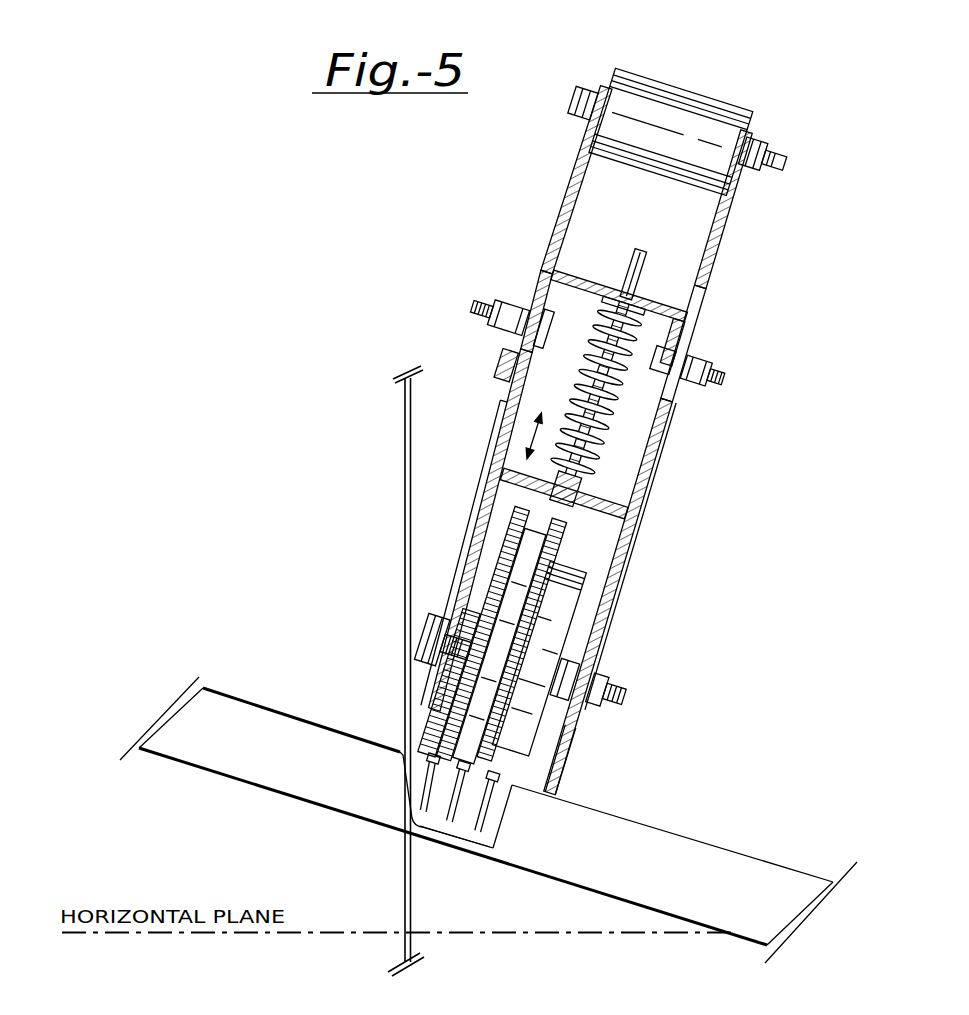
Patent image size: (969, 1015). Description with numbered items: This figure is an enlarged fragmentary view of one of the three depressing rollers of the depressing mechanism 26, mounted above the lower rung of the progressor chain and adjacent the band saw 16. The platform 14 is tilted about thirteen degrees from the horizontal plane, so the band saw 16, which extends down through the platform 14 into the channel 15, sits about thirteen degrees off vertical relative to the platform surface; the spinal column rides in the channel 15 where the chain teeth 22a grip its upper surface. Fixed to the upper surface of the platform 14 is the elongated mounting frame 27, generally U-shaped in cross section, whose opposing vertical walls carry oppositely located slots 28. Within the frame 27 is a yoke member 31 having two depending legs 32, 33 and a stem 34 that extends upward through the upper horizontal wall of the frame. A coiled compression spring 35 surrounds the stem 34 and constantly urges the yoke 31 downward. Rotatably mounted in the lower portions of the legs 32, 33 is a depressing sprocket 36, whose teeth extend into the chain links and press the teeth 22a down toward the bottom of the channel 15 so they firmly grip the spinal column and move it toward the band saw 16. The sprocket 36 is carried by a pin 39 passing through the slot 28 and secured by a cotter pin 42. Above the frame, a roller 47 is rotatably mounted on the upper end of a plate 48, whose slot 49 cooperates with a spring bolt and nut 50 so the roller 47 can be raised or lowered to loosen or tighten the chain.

The platform 14 is at (716, 831).
The channel 15 is at (438, 817).
The band saw 16 is at (405, 436).
The spinal-column-engaging tooth 22a is at (472, 825).
The depressing mechanism 26 is at (598, 451).
The mounting frame 27 is at (503, 412).
The slots 28 is at (604, 627).
The yoke member 31 is at (617, 507).
The leg 32 is at (476, 530).
The leg 33 is at (630, 548).
The stem 34 is at (627, 268).
The coiled compression spring 35 is at (606, 385).
The depressing sprocket 36 is at (484, 790).
The pin 39 is at (616, 678).
The cotter pin 42 is at (581, 702).
The roller 47 is at (663, 80).
The plate 48 is at (742, 208).
The slot 49 is at (724, 300).
The spring bolt and nut 50 is at (720, 372).